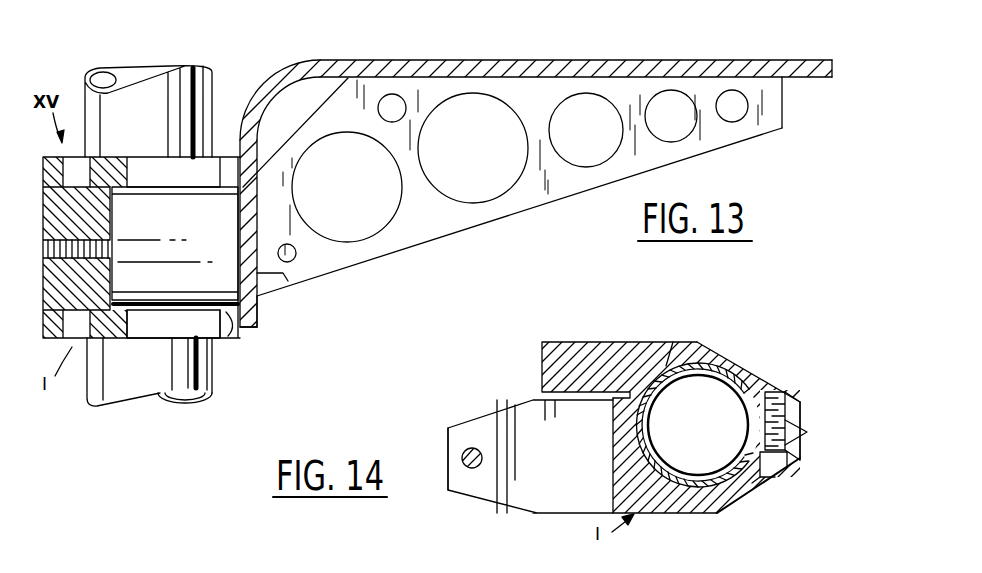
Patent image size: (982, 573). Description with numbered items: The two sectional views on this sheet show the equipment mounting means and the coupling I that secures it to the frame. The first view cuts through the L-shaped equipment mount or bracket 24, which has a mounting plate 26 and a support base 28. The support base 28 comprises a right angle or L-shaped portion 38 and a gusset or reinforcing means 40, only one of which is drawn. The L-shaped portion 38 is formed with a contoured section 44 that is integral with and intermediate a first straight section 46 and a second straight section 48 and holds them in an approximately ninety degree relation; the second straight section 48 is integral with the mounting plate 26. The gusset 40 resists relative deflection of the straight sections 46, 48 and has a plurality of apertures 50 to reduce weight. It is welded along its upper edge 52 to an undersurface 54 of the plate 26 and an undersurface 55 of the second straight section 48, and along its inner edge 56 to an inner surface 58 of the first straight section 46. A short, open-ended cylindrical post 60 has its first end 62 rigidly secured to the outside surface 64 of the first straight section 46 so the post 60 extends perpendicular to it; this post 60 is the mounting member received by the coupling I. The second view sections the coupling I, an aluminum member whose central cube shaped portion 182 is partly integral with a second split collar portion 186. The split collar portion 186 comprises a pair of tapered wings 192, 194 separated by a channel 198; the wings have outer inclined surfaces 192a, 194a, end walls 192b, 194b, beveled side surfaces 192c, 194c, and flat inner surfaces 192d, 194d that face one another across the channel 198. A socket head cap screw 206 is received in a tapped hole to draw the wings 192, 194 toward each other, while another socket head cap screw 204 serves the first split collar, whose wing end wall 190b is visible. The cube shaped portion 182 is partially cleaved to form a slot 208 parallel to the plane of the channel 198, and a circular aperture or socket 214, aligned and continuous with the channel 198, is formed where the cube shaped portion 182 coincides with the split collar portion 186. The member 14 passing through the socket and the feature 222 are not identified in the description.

In FIG. 13, the tube 14 is at (180, 68).
In FIG. 14, the tube 14 is at (750, 385).
In FIG. 13, the equipment mount 24 is at (832, 79).
In FIG. 13, the mounting plate 26 is at (830, 58).
In FIG. 13, the support base 28 is at (270, 305).
In FIG. 13, the L-shaped portion 38 is at (242, 116).
In FIG. 13, the gussets 40 is at (550, 196).
In FIG. 13, the contoured section 44 is at (250, 112).
In FIG. 13, the first straight section 46 is at (257, 330).
In FIG. 13, the second straight section 48 is at (320, 60).
In FIG. 13, the apertures 50 is at (392, 214).
In FIG. 13, the upper edges 52 is at (443, 60).
In FIG. 13, the undersurface 54 is at (530, 60).
In FIG. 13, the undersurface 55 is at (385, 76).
In FIG. 13, the inner edge 56 is at (263, 250).
In FIG. 13, the inner surface 58 is at (292, 284).
In FIG. 13, the post 60 is at (220, 247).
In FIG. 13, the first end 62 is at (193, 311).
In FIG. 13, the outside surface 64 is at (233, 338).
In FIG. 14, the central cube shaped portion 182 is at (677, 515).
In FIG. 14, the second split collar portion 186 is at (703, 350).
In FIG. 14, the end wall 190b is at (446, 480).
In FIG. 14, the tapered wing 192 is at (722, 362).
In FIG. 14, the outer inclined surface 192a is at (732, 373).
In FIG. 14, the end wall 192b is at (803, 407).
In FIG. 14, the beveled side surfaces 192c is at (755, 390).
In FIG. 14, the flat inner surface 192d is at (800, 420).
In FIG. 14, the tapered wing 194 is at (723, 510).
In FIG. 14, the outer inclined surface 194a is at (750, 498).
In FIG. 14, the end wall 194b is at (803, 453).
In FIG. 14, the beveled side surfaces 194c is at (753, 480).
In FIG. 14, the flat inner surface 194d is at (802, 443).
In FIG. 14, the channel 198 is at (805, 431).
In FIG. 14, the socket head cap screw 204 is at (464, 458).
In FIG. 14, the socket head cap screw 206 is at (766, 432).
In FIG. 14, the slot 208 is at (573, 390).
In FIG. 14, the circular aperture 214 is at (673, 342).
In FIG. 14, the nose block 222 is at (530, 410).